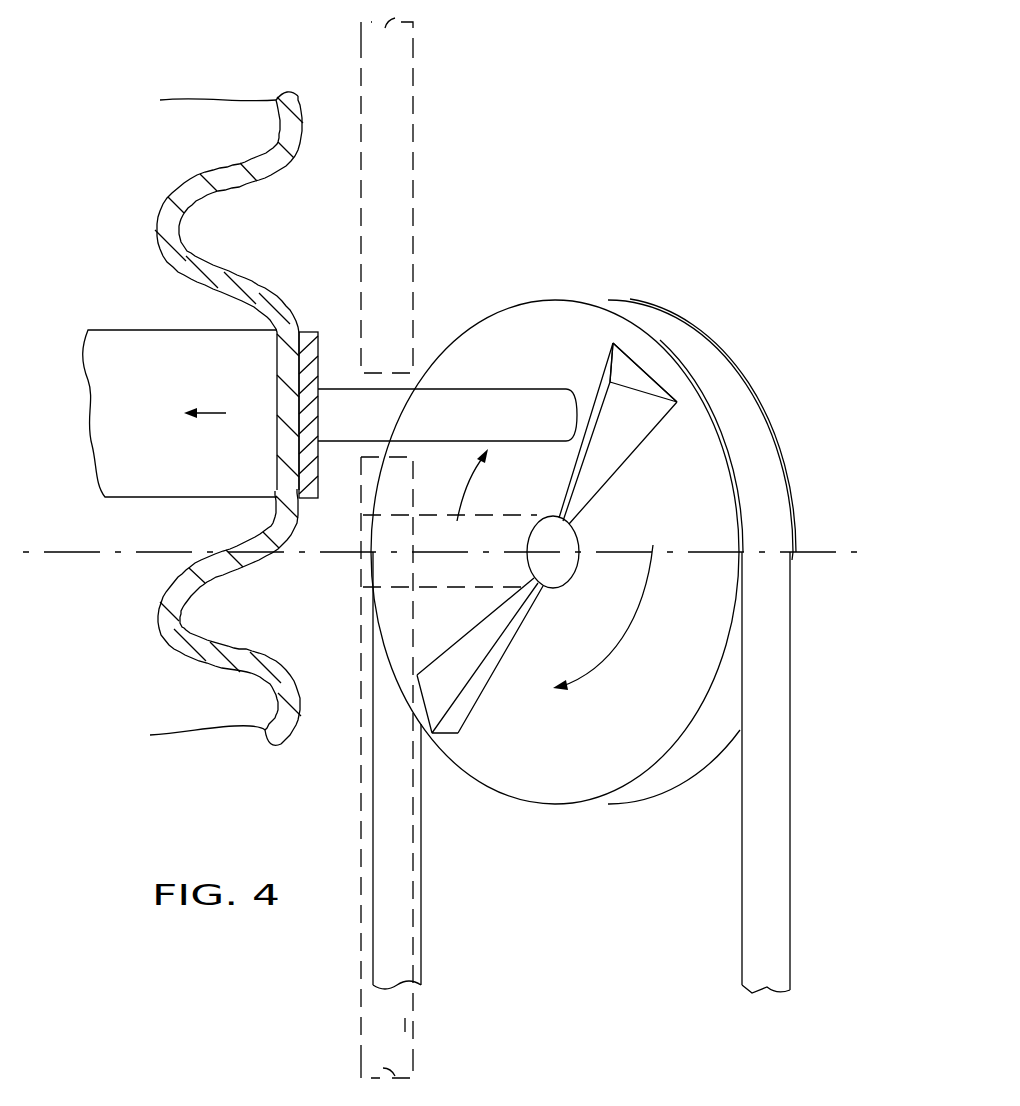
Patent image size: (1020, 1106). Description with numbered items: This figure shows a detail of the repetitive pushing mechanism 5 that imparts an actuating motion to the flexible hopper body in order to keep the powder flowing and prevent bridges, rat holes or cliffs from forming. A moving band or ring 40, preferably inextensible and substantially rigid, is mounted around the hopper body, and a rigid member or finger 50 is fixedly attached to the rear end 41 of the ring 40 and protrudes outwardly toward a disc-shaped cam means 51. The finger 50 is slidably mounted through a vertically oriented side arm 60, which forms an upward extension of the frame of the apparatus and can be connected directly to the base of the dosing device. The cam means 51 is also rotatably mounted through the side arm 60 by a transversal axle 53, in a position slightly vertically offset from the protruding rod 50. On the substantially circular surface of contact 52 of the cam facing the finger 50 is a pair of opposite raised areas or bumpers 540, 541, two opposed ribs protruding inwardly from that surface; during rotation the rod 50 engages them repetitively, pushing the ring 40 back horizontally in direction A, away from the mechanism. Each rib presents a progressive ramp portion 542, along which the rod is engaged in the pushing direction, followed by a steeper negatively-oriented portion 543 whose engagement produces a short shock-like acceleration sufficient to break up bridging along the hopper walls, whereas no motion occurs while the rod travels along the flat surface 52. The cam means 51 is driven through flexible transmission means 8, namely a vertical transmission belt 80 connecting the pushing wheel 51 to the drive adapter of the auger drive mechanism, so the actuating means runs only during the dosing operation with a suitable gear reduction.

The repetitive pushing mechanism 5 is at (693, 247).
The flexible transmission means 8 is at (803, 684).
The moving band or ring 40 is at (143, 347).
The rear end of the ring 41 is at (322, 343).
The rigid member or finger 50 is at (497, 397).
The disc-shaped cam means 51 is at (543, 826).
The circular surface of contact 52 is at (710, 490).
The transversal axle 53 is at (455, 588).
The side arm 60 is at (407, 1027).
The vertical transmission belt 80 is at (760, 880).
The raised area or bumper 540 is at (642, 375).
The raised area or bumper 541 is at (464, 710).
The progressive ramp portion 542 is at (647, 415).
The steeper negatively-oriented portion 543 is at (611, 382).